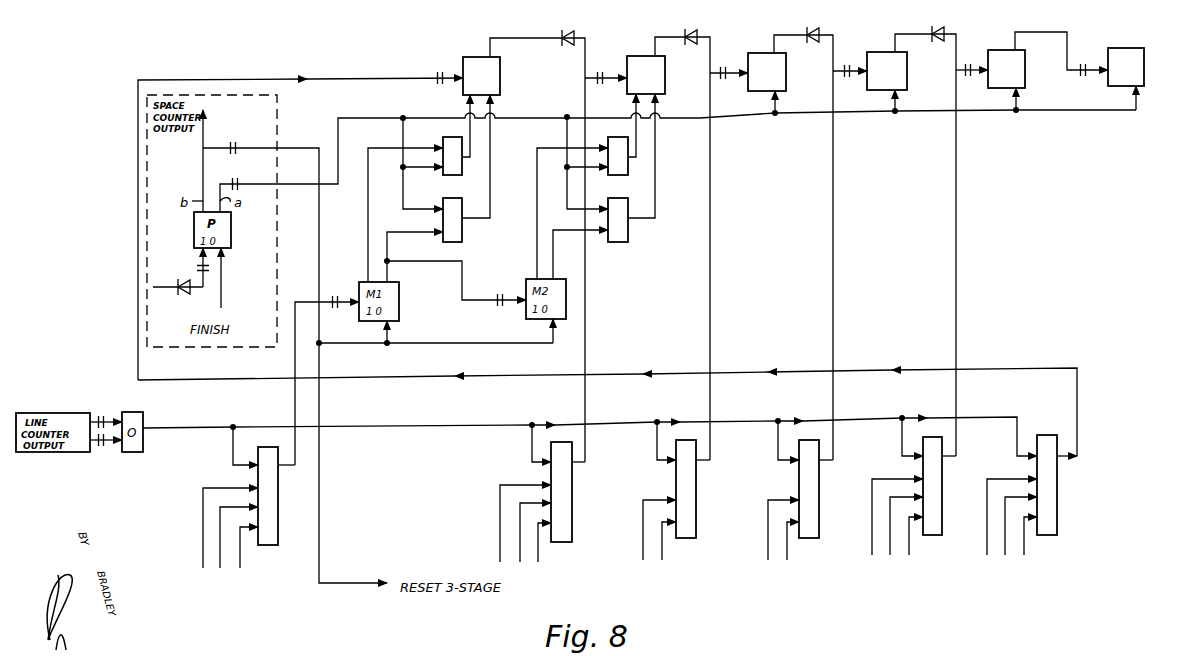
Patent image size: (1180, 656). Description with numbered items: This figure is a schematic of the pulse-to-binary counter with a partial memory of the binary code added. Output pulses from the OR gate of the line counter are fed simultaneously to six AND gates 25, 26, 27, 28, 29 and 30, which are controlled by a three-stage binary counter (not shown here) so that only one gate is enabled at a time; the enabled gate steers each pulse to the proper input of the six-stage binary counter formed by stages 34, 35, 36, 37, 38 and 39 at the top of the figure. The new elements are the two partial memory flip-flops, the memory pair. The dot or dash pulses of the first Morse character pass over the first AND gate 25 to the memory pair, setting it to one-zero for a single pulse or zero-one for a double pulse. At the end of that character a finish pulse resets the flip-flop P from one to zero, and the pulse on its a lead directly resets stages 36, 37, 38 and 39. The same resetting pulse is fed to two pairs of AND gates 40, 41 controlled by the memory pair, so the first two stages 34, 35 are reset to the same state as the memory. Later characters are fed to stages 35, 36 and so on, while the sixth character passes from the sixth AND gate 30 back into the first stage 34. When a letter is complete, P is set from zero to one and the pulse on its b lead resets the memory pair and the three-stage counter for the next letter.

The first AND gate 25 is at (268, 538).
The second AND gate 26 is at (565, 537).
The AND gate 27 is at (688, 535).
The AND gate 28 is at (810, 535).
The AND gate 29 is at (930, 533).
The sixth AND gate 30 is at (1047, 533).
The first stage of six-stage binary counter 34 is at (480, 62).
The second stage of six-stage binary counter 35 is at (643, 60).
The third stage of six-stage binary counter 36 is at (766, 58).
The fourth stage of six-stage binary counter 37 is at (883, 57).
The fifth stage of six-stage binary counter 38 is at (1003, 53).
The sixth stage of six-stage binary counter 39 is at (1125, 51).
The pair of AND gates 40 is at (451, 198).
The pair of AND gates 41 is at (617, 197).